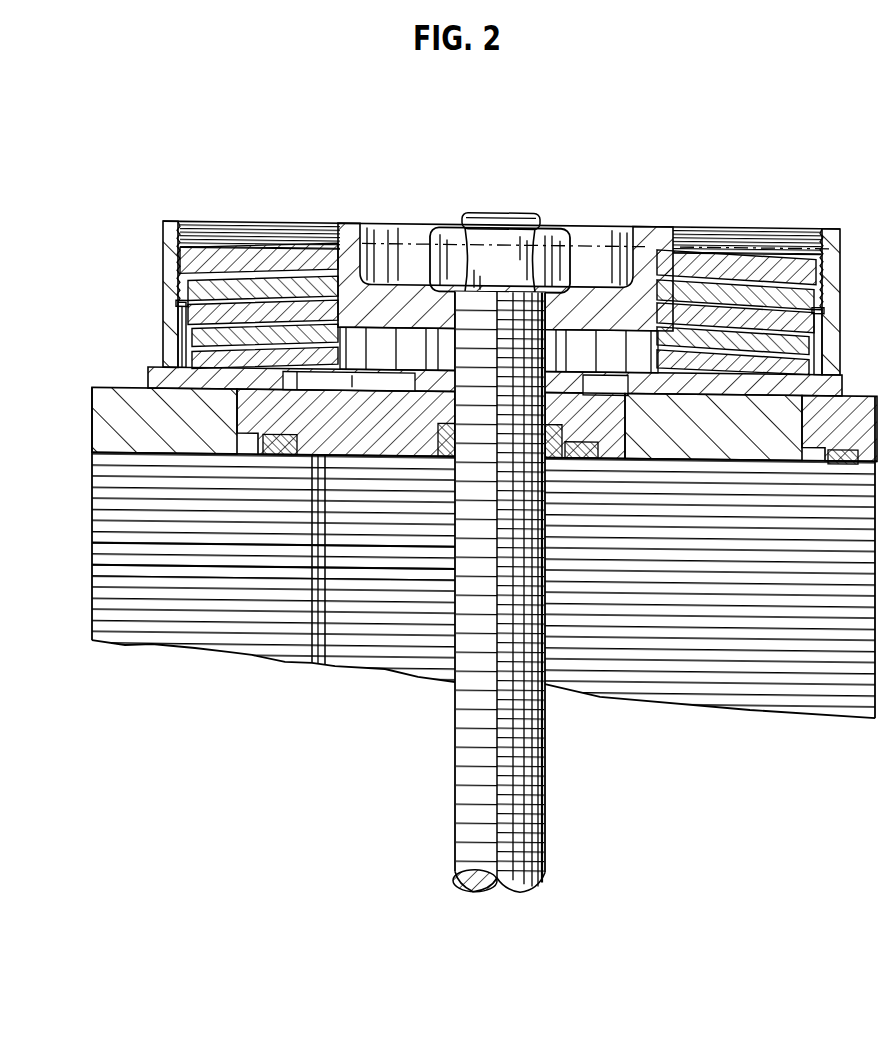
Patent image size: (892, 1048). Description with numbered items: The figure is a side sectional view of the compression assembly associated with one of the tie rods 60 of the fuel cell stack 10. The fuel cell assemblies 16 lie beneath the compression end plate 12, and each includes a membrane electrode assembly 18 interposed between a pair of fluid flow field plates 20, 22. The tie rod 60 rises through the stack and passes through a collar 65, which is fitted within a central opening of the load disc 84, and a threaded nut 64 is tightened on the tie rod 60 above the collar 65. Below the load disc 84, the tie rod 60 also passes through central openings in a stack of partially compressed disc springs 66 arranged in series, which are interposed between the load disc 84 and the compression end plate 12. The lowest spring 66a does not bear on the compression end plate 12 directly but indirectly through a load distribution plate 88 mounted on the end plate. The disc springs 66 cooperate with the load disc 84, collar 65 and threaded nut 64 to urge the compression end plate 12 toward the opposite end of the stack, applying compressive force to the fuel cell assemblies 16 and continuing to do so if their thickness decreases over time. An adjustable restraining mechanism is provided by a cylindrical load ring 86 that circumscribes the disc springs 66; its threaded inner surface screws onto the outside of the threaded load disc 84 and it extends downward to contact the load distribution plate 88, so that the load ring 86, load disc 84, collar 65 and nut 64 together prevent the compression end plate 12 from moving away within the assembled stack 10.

The fuel cell stack 10 is at (123, 654).
The compression end plate 12 is at (120, 397).
The fuel cell assemblies 16 is at (89, 500).
The membrane electrode assembly 18 is at (93, 560).
The fluid flow field plate 20 is at (93, 553).
The fluid flow field plate 22 is at (93, 569).
The tie rod 60 is at (462, 715).
The threaded nut 64 is at (568, 250).
The collar 65 is at (333, 222).
The disc springs 66 is at (181, 300).
The spring 66a is at (178, 293).
The load disc 84 is at (197, 250).
The load ring 86 is at (172, 224).
The load distribution plate 88 is at (172, 362).